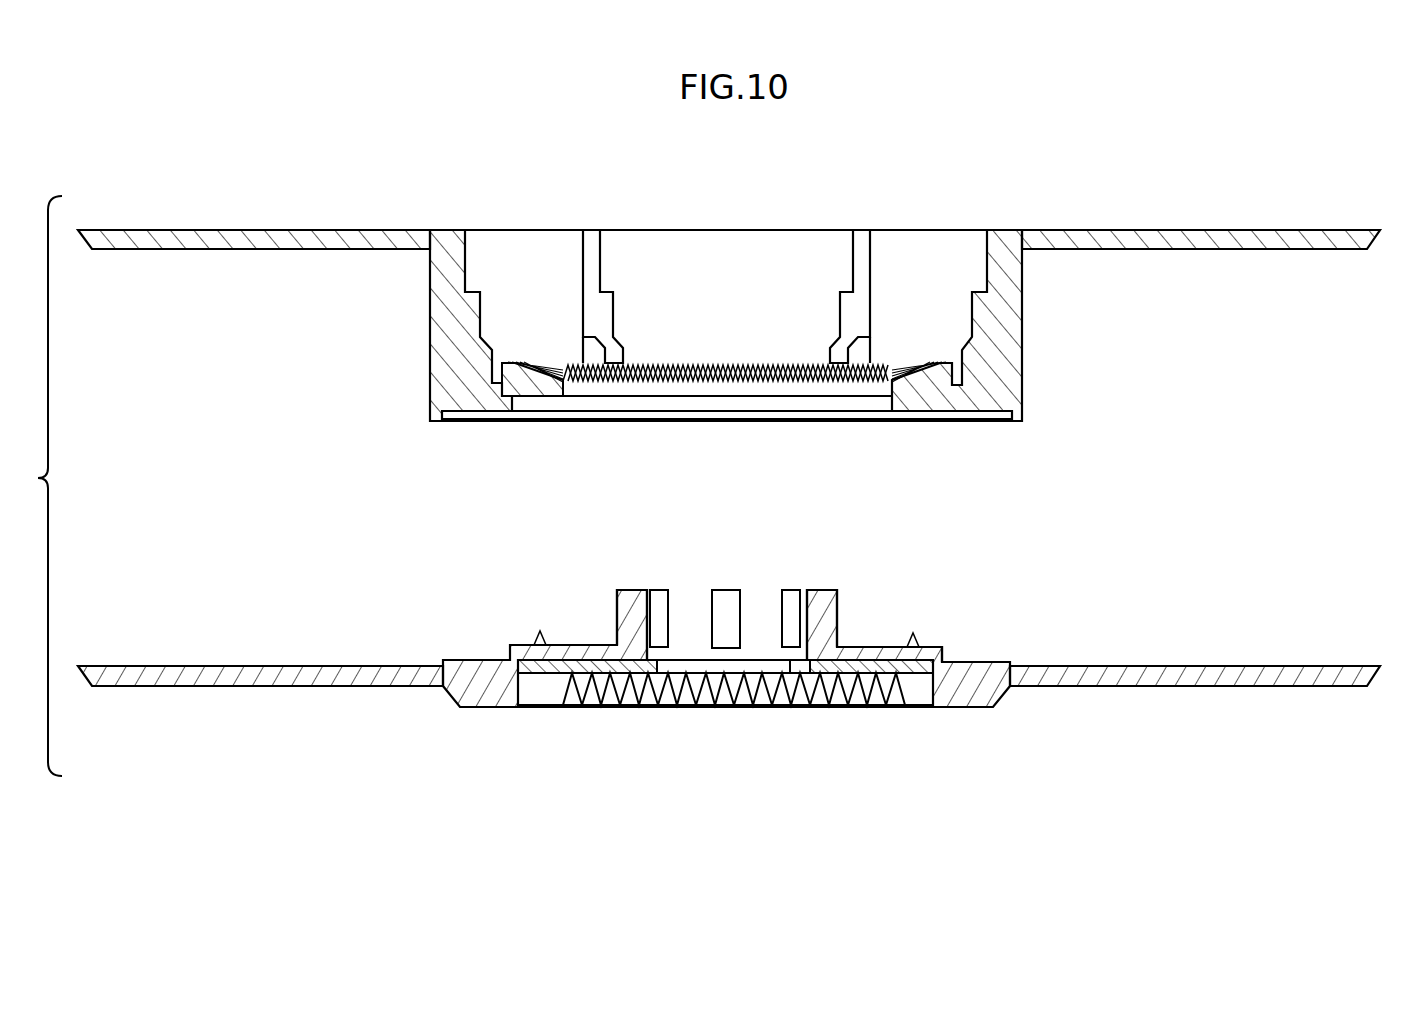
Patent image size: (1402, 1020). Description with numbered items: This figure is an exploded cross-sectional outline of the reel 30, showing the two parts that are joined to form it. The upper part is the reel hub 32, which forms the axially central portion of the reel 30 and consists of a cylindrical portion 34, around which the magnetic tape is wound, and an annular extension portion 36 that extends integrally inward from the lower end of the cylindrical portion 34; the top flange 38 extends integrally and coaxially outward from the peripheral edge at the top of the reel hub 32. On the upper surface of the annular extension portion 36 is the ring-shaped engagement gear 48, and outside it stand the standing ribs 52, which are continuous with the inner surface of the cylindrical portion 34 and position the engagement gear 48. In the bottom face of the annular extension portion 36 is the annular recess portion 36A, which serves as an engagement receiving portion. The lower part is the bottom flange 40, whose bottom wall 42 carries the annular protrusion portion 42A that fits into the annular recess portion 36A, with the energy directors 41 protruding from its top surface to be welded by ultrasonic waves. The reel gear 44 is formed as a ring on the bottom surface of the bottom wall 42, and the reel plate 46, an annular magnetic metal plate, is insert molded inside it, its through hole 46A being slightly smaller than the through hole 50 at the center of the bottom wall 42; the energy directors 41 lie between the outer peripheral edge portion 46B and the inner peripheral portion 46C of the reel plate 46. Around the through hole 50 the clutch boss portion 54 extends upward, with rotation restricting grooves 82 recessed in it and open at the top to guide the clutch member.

The reel 30 is at (1220, 170).
The top flange 38 is at (1202, 252).
The reel hub 32 is at (797, 338).
The cylindrical portion 34 is at (1022, 338).
The annular extension portion 36 is at (972, 419).
The annular recess portion 36A is at (915, 420).
The engagement gear 48 is at (912, 366).
The standing ribs 52 is at (613, 318).
The bottom flange 40 is at (1205, 667).
The bottom wall 42 is at (737, 646).
The annular protrusion portion 42A is at (935, 648).
The clutch boss portion 54 is at (617, 620).
The rotation restricting grooves 82 is at (722, 612).
The energy directors 41 is at (540, 631).
The reel plate 46 is at (727, 720).
The through hole 46A is at (666, 664).
The outer peripheral edge portion 46B is at (918, 672).
The inner peripheral portion 46C is at (790, 672).
The reel gear 44 is at (705, 706).
The through hole 50 is at (790, 660).